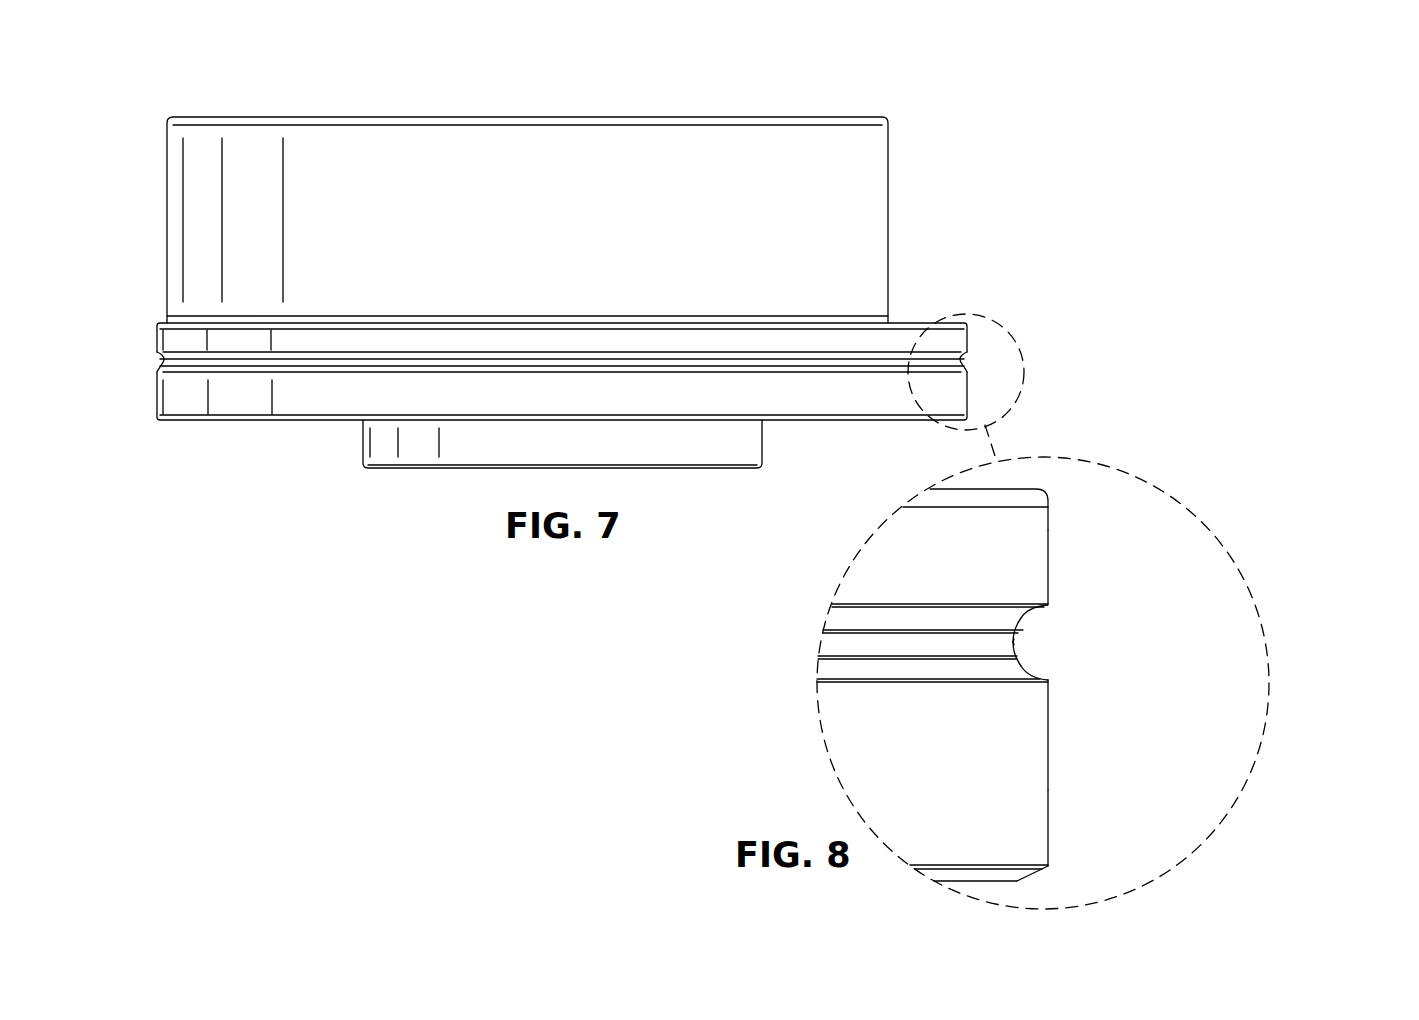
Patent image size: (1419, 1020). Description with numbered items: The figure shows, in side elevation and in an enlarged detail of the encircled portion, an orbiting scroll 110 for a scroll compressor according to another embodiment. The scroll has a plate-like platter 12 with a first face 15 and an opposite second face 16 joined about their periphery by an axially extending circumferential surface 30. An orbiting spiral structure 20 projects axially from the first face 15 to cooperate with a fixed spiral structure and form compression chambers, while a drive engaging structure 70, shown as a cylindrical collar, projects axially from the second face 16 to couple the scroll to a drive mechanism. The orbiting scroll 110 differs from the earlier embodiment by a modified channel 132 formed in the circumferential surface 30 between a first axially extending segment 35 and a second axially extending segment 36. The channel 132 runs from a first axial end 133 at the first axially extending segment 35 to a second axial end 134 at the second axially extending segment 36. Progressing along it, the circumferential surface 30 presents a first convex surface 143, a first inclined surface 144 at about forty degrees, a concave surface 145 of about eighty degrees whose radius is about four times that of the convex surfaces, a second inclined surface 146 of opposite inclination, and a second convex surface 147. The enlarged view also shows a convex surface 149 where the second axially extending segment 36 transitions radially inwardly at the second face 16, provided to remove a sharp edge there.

In FIG. 7, the orbiting scroll 110 is at (946, 134).
In FIG. 7, the orbiting spiral structure 20 is at (705, 117).
In FIG. 7, the platter 12 is at (972, 294).
In FIG. 7, the first face 15 is at (905, 322).
In FIG. 8, the first face 15 is at (1010, 489).
In FIG. 7, the circumferential surface 30 is at (978, 332).
In FIG. 8, the circumferential surface 30 is at (1048, 792).
In FIG. 7, the channel 132 is at (983, 358).
In FIG. 8, the channel 132 is at (1046, 636).
In FIG. 7, the second face 16 is at (907, 423).
In FIG. 8, the second face 16 is at (1000, 881).
In FIG. 7, the drive engaging structure 70 is at (740, 468).
In FIG. 8, the first axially extending segment 35 is at (1048, 527).
In FIG. 8, the first axial end 133 is at (1048, 604).
In FIG. 8, the first convex surface 143 is at (1046, 606).
In FIG. 8, the first inclined surface 144 is at (1028, 620).
In FIG. 8, the concave surface 145 is at (1028, 652).
In FIG. 8, the second inclined surface 146 is at (1048, 680).
In FIG. 8, the second convex surface 147 is at (1048, 683).
In FIG. 8, the second axial end 134 is at (1048, 690).
In FIG. 8, the second axially extending segment 36 is at (1048, 836).
In FIG. 8, the convex surface 149 is at (1042, 870).